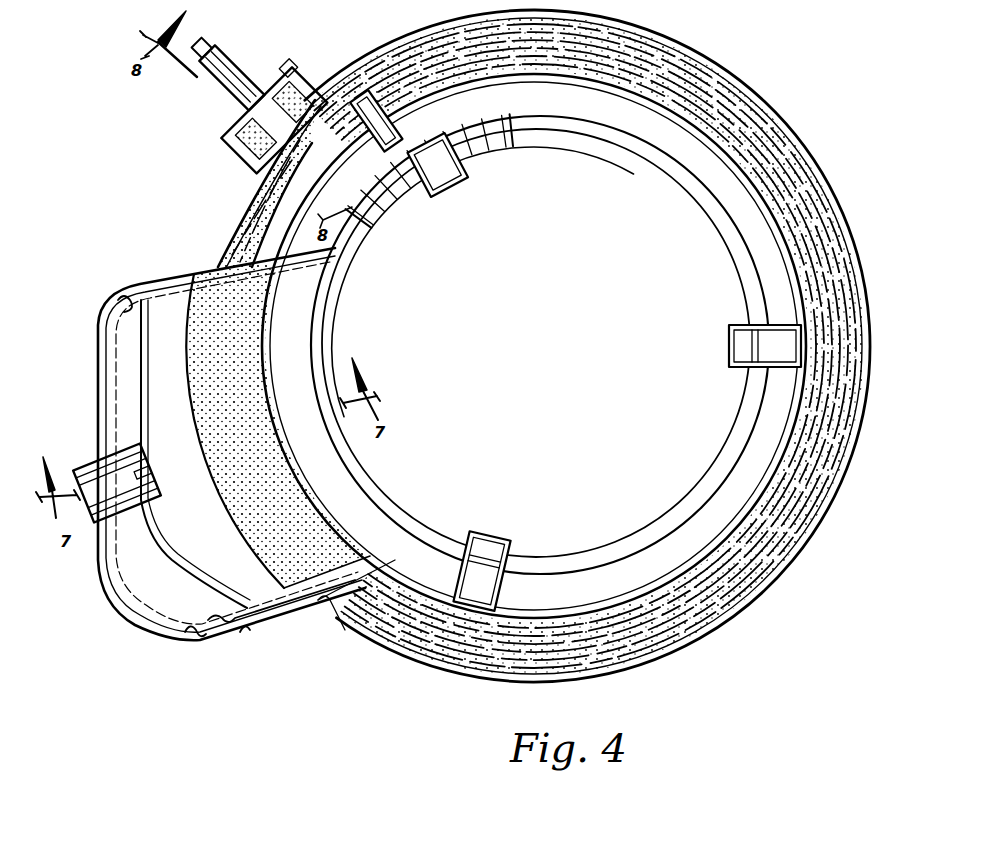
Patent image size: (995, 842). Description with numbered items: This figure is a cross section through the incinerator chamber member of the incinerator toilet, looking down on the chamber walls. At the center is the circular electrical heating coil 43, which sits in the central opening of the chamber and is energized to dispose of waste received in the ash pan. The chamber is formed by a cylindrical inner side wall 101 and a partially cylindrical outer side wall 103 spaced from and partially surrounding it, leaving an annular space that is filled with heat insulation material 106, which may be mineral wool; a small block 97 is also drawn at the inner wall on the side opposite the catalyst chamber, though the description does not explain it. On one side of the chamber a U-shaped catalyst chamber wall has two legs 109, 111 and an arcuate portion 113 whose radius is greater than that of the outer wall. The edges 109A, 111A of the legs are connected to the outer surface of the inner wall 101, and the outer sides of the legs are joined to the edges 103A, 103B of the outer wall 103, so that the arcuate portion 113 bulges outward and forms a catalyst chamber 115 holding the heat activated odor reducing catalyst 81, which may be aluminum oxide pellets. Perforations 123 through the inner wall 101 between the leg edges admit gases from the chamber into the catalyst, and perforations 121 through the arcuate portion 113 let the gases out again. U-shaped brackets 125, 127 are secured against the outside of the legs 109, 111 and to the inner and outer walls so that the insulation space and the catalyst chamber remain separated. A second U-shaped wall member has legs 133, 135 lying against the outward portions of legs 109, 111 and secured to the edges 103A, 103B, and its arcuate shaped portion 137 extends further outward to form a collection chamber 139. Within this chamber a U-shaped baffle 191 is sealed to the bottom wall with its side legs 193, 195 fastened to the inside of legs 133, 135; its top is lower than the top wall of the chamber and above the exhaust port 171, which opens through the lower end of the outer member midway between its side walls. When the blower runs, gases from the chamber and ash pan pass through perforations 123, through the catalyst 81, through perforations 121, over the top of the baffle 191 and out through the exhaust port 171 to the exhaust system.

The outer side wall 103 is at (806, 132).
The heat insulation material 106 is at (746, 602).
The U-shaped bracket 127 is at (430, 655).
The inner side wall 101 is at (718, 184).
The electrical heating coil 43 is at (742, 268).
The spacer block 97 is at (729, 350).
The edge of leg 109A is at (365, 246).
The U-shaped bracket 125 is at (240, 203).
The leg 109 is at (206, 270).
The catalyst chamber 115 is at (152, 272).
The arcuate shaped portion 137 is at (192, 560).
The arcuate portion 113 is at (215, 576).
The leg 135 is at (190, 636).
The side leg of baffle 195 is at (250, 642).
The heat activated odor reducing catalyst 81 is at (272, 622).
The leg 111 is at (320, 606).
The edge of outer side wall 103B is at (350, 646).
The edge of leg 111A is at (396, 560).
The perforations 123 is at (300, 356).
The perforations 121 is at (110, 362).
The collection chamber 139 is at (110, 412).
The U-shaped baffle 191 is at (110, 330).
The side leg of baffle 193 is at (114, 305).
The leg 133 is at (122, 290).
The edge of outer side wall 103A is at (336, 268).
The exhaust port 171 is at (124, 524).